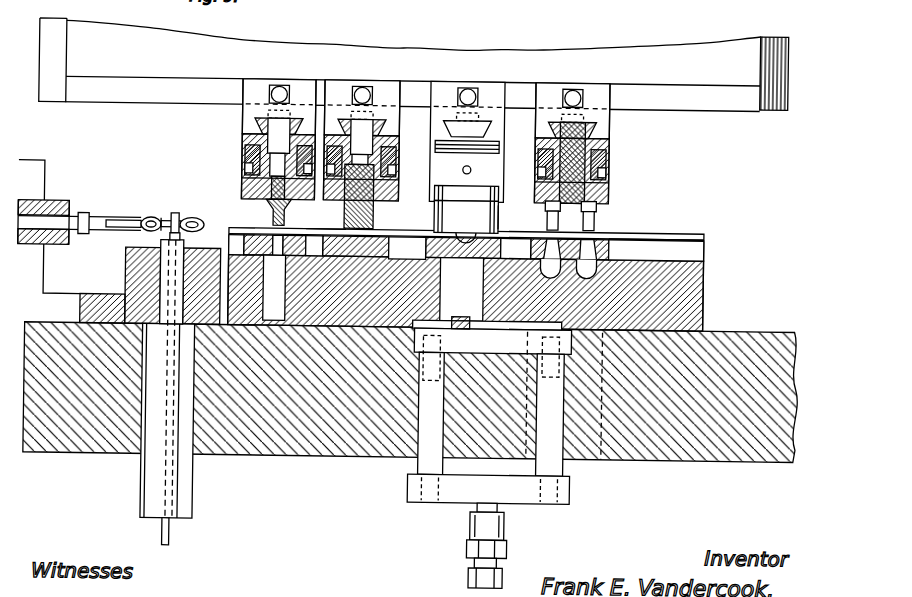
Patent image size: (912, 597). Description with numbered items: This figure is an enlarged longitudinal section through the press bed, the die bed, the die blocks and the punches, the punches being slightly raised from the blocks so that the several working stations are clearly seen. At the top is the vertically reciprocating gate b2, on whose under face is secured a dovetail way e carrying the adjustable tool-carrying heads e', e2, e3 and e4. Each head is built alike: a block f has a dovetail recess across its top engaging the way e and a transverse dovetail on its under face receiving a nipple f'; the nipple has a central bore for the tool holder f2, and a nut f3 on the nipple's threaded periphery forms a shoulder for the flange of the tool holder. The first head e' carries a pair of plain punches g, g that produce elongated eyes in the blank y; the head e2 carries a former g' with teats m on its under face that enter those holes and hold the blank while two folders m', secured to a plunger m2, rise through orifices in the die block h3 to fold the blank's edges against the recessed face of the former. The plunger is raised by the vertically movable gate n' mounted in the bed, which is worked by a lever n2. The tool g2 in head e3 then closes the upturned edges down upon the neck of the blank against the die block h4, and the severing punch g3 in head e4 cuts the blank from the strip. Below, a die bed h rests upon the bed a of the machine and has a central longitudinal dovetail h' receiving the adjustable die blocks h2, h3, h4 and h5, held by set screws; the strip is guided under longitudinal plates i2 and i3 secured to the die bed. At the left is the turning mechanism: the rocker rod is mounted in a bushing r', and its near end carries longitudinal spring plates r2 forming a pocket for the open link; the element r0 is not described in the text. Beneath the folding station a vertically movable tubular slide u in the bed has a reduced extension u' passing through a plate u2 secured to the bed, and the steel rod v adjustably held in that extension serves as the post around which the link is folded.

The bed a is at (760, 332).
The vertically reciprocating gate b2 is at (414, 65).
The dovetail way e is at (399, 94).
The first tool-carrying head e' is at (572, 129).
The tool-carrying head e2 is at (446, 87).
The tool-carrying head e3 is at (332, 87).
The tool-carrying head e4 is at (250, 87).
The block f is at (416, 110).
The nipple f' is at (422, 160).
The tool holder f2 is at (240, 191).
The nut f3 is at (238, 160).
The plain punches g is at (576, 216).
The former g' is at (508, 216).
The tool g2 is at (372, 217).
The severing punch g3 is at (283, 219).
The die bed h is at (478, 283).
The central longitudinal dovetail h' is at (662, 233).
The die block h2 is at (628, 232).
The die block h3 is at (516, 248).
The die block h4 is at (407, 248).
The die block h5 is at (248, 235).
The longitudinal plates i2 is at (703, 233).
The longitudinal plates i3 is at (325, 231).
The teats m is at (466, 221).
The folders m' is at (462, 290).
The plunger m2 is at (458, 312).
The vertically movable gate n' is at (485, 412).
The lever n2 is at (510, 531).
The bushing r' is at (46, 202).
The rod r0 is at (70, 222).
The longitudinal spring plates r2 is at (120, 233).
The tubular slide u is at (181, 392).
The reduced extension u' is at (127, 254).
The plate u2 is at (100, 307).
The steel rod v is at (171, 223).
The blank y is at (177, 221).